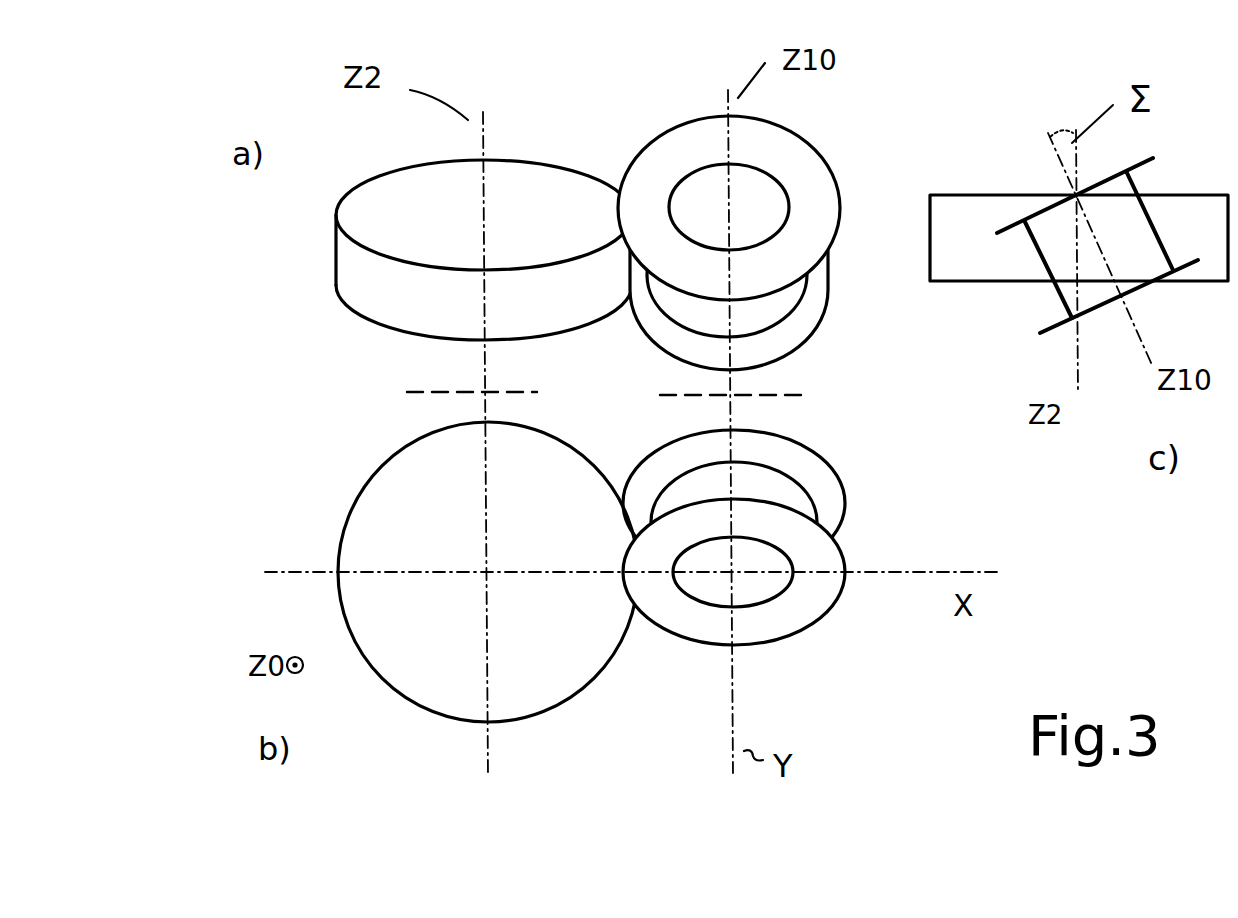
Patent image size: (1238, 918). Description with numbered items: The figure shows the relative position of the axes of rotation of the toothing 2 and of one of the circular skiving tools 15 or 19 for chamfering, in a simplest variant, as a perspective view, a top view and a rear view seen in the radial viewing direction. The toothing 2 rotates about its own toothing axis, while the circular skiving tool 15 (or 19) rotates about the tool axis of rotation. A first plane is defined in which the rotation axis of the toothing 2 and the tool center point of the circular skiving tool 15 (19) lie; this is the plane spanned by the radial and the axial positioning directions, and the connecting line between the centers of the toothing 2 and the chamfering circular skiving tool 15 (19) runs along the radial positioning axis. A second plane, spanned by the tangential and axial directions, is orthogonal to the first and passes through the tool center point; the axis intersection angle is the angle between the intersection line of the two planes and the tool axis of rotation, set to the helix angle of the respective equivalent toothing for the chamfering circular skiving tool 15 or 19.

The toothing 2 is at (345, 352).
The circular skiving tool for chamfering 15 is at (800, 170).
The chamfering circular skiving tool 19 is at (810, 322).